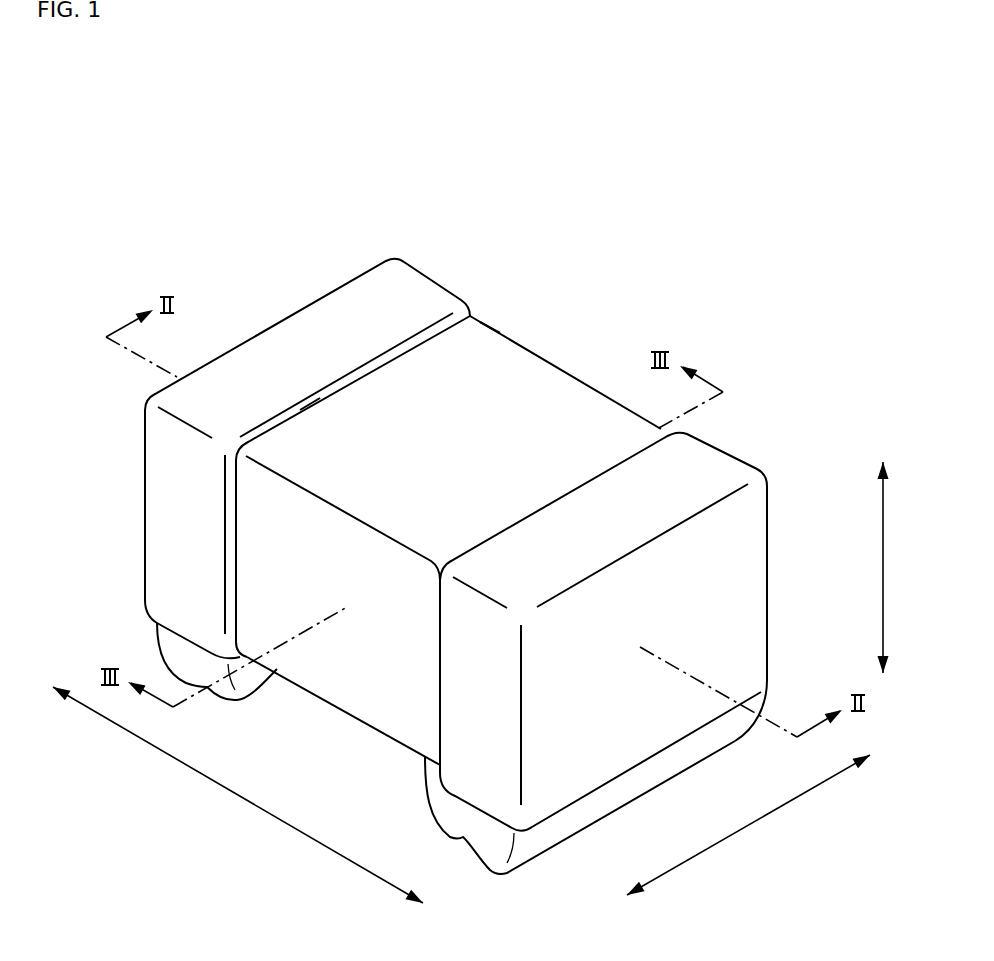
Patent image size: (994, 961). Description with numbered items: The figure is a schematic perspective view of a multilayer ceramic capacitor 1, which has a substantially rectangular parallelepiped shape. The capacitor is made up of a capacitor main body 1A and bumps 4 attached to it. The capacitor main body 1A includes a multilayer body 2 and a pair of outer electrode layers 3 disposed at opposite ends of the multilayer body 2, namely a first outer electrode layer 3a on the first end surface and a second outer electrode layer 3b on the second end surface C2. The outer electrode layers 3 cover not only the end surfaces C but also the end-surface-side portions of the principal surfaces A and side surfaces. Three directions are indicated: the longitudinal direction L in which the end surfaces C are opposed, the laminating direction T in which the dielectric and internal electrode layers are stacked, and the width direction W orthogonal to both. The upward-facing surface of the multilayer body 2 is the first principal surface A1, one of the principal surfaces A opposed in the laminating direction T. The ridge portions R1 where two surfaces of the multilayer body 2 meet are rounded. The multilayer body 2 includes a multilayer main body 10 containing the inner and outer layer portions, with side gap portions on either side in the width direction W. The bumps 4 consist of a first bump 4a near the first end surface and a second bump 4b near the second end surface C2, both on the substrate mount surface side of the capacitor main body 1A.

The multilayer ceramic capacitor 1 is at (803, 316).
The capacitor main body 1A is at (403, 206).
The multilayer body 2 is at (480, 367).
The outer electrode layers 3 is at (460, 517).
The first outer electrode layer 3a is at (395, 287).
The second outer electrode layer 3b is at (722, 463).
The bumps 4 is at (399, 774).
The first bump 4a is at (173, 656).
The second bump 4b is at (480, 837).
The multilayer main body 10 is at (377, 400).
The ridge portion R1 is at (527, 350).
The first principal surface A1 is at (427, 453).
The principal surfaces A is at (471, 317).
The second end surface C2 is at (343, 657).
The end surfaces C is at (248, 658).
The longitudinal direction L is at (238, 795).
The width direction W is at (748, 825).
The laminating direction T is at (893, 567).